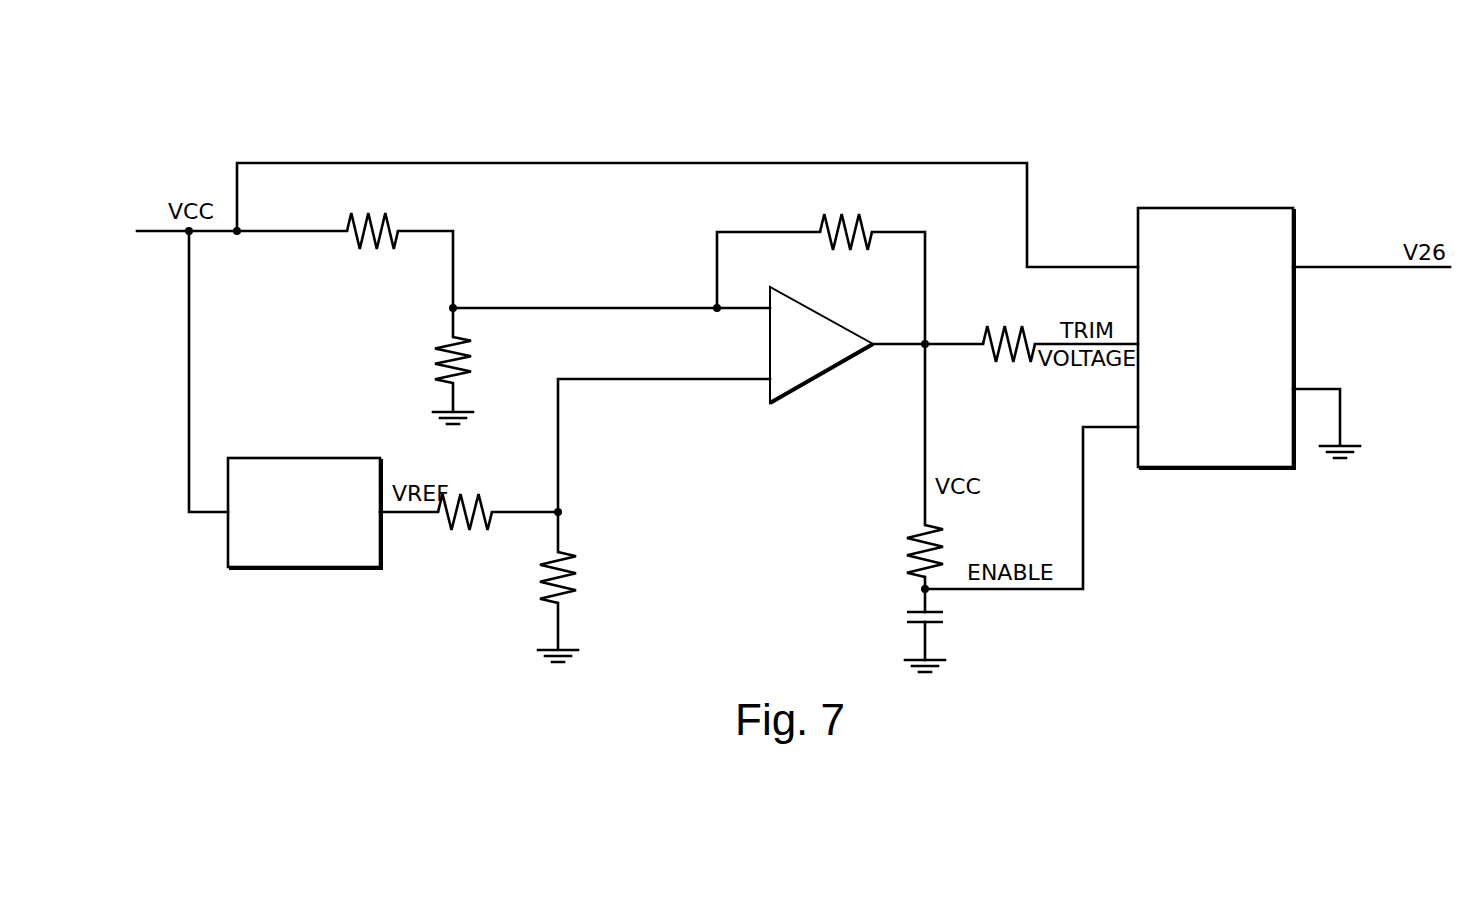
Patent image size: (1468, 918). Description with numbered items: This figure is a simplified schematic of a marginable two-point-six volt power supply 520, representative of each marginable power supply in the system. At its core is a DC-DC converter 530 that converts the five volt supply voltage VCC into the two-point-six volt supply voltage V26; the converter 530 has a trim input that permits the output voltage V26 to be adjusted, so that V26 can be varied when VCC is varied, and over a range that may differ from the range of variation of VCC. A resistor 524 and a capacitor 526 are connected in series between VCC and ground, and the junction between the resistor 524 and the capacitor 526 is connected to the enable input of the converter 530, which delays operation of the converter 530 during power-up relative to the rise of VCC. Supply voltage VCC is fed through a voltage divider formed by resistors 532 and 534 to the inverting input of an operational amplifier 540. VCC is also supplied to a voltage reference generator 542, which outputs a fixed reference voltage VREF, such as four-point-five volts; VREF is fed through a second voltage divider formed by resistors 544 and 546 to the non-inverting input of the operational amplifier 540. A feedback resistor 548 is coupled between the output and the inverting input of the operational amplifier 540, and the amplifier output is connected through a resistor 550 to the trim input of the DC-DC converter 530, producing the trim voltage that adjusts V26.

The marginable 2.6 volt power supply 520 is at (861, 78).
The resistor 524 is at (906, 548).
The capacitor 526 is at (910, 608).
The DC-DC converter 530 is at (1208, 208).
The resistor 532 is at (381, 249).
The resistor 534 is at (452, 358).
The operational amplifier 540 is at (823, 378).
The voltage reference generator 542 is at (312, 458).
The resistor 544 is at (466, 531).
The resistor 546 is at (572, 585).
The feedback resistor 548 is at (856, 246).
The resistor 550 is at (990, 362).